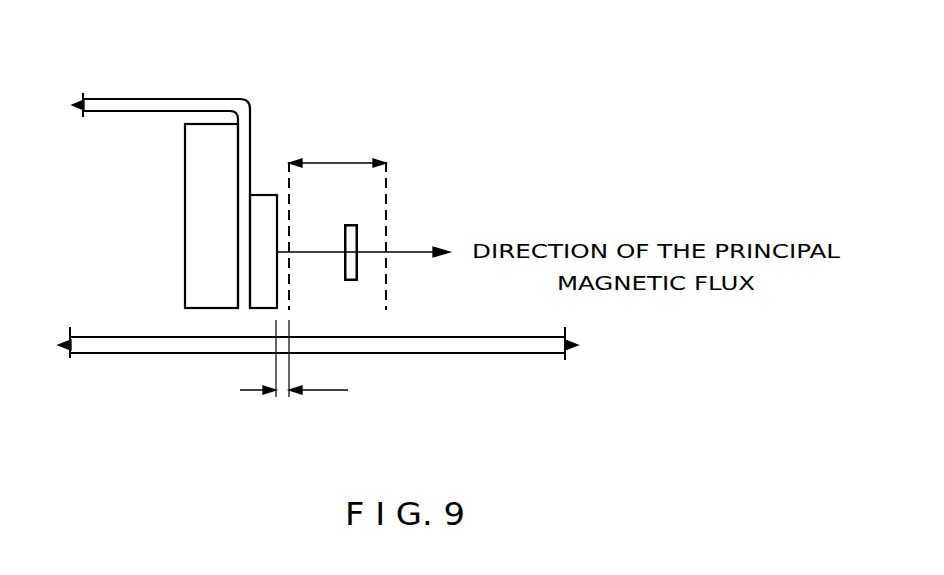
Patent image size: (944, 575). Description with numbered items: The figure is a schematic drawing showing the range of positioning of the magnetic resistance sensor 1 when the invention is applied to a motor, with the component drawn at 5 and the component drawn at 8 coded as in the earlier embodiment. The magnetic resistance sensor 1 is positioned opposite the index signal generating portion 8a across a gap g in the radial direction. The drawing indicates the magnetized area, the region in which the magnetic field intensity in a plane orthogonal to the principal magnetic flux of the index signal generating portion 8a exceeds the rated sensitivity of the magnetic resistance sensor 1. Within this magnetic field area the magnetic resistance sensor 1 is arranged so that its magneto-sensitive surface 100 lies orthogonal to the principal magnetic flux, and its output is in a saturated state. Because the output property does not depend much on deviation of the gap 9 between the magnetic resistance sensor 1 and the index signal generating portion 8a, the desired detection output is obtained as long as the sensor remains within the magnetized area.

The magnetic yoke / pipe 5 is at (163, 102).
The magnet 8 is at (197, 187).
The index signal generating portion 8a is at (260, 205).
The magnetic resistance sensor 1 is at (352, 230).
The magneto-sensitive surface 100 is at (352, 260).
The gap 9 is at (503, 348).
The gap g is at (294, 358).